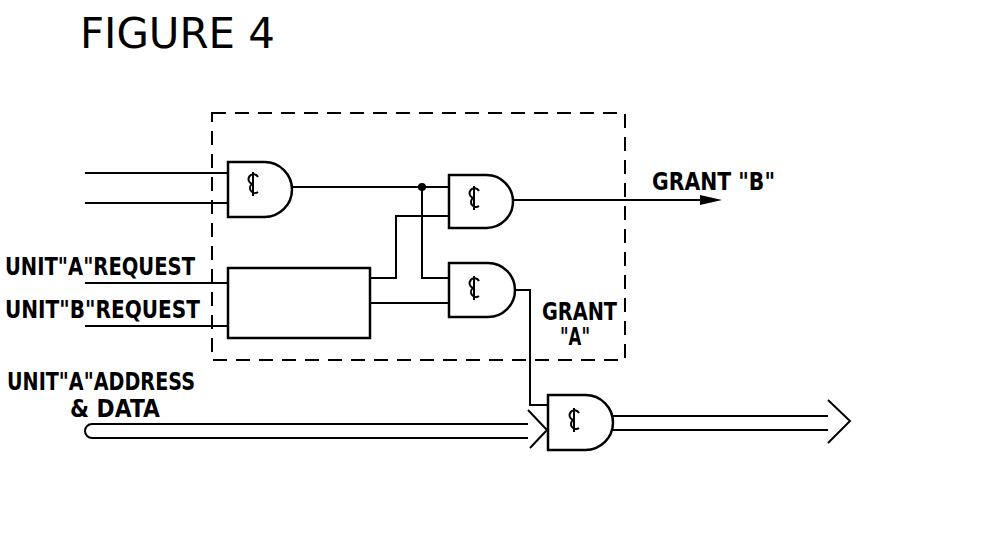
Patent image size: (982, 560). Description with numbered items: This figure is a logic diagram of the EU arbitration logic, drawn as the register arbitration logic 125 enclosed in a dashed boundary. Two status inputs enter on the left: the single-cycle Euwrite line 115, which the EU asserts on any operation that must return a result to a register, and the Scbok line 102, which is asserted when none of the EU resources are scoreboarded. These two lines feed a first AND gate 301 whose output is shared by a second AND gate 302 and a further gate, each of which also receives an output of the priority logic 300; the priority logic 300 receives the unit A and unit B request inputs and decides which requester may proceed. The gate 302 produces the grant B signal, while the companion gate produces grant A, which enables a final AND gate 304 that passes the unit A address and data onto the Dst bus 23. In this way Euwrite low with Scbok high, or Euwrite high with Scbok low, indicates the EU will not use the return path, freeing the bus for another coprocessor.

The register arbitration logic 125 is at (296, 112).
The Euwrite line 115 is at (194, 172).
The Scbok line 102 is at (187, 203).
The AND gate 301 is at (276, 162).
The AND gate 302 is at (452, 175).
The priority logic 300 is at (318, 268).
The AND gate 304 is at (608, 405).
The DST bus 23 is at (697, 416).